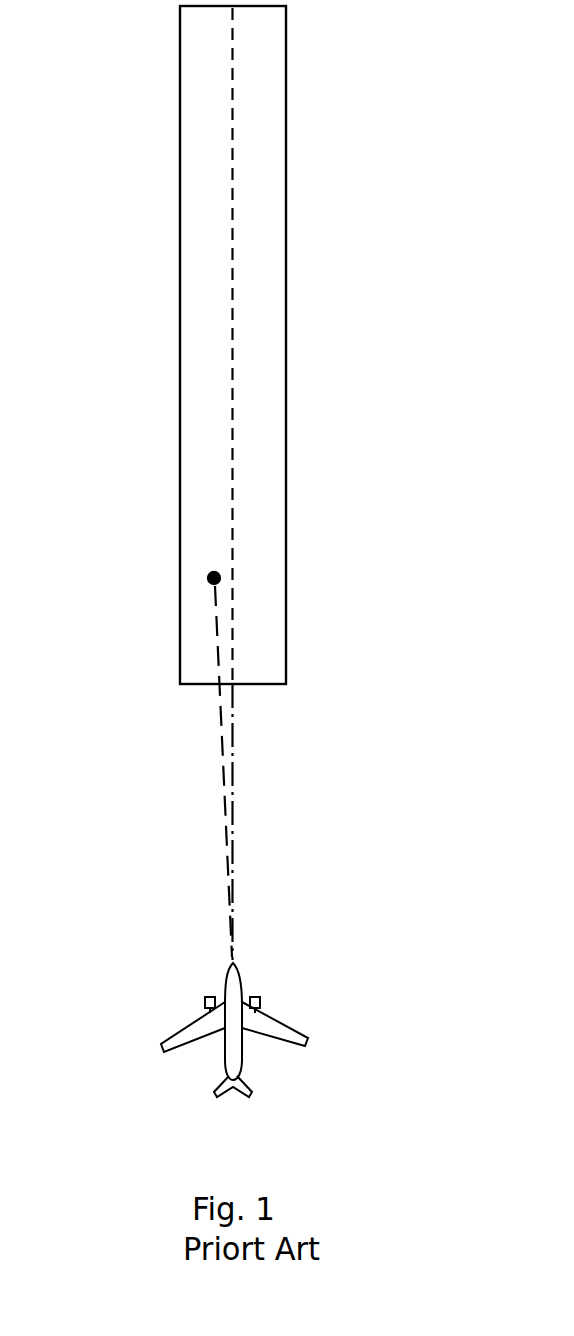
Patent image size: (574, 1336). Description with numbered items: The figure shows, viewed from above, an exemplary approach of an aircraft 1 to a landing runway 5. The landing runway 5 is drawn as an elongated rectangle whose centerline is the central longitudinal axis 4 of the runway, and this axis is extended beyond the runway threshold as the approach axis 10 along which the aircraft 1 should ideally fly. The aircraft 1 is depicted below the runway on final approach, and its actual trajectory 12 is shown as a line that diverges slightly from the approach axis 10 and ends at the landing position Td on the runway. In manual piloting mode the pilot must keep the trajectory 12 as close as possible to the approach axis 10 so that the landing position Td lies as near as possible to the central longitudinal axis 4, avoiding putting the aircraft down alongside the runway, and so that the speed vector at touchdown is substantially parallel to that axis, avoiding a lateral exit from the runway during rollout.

The aircraft 1 is at (308, 1033).
The central longitudinal axis of the landing runway 4 is at (232, 96).
The landing runway 5 is at (286, 142).
The approach axis 10 is at (233, 763).
The trajectory 12 is at (218, 720).
The landing position Td is at (209, 571).